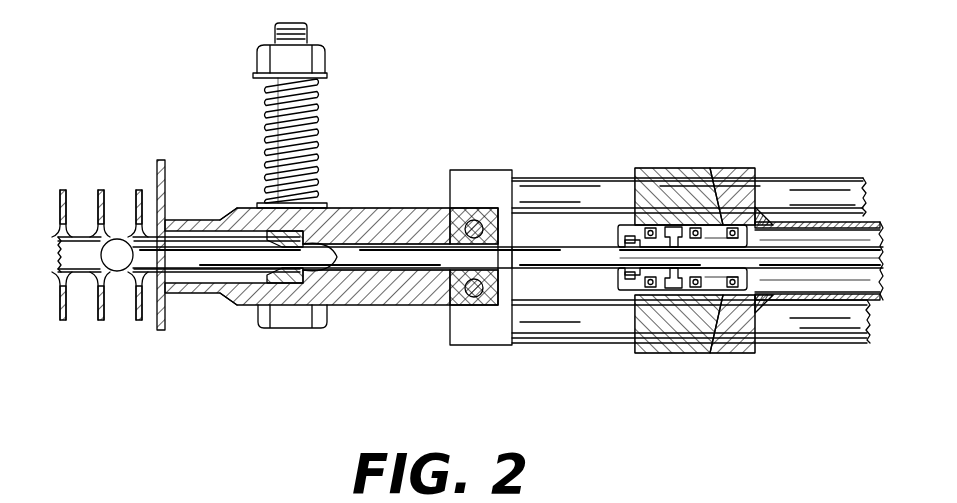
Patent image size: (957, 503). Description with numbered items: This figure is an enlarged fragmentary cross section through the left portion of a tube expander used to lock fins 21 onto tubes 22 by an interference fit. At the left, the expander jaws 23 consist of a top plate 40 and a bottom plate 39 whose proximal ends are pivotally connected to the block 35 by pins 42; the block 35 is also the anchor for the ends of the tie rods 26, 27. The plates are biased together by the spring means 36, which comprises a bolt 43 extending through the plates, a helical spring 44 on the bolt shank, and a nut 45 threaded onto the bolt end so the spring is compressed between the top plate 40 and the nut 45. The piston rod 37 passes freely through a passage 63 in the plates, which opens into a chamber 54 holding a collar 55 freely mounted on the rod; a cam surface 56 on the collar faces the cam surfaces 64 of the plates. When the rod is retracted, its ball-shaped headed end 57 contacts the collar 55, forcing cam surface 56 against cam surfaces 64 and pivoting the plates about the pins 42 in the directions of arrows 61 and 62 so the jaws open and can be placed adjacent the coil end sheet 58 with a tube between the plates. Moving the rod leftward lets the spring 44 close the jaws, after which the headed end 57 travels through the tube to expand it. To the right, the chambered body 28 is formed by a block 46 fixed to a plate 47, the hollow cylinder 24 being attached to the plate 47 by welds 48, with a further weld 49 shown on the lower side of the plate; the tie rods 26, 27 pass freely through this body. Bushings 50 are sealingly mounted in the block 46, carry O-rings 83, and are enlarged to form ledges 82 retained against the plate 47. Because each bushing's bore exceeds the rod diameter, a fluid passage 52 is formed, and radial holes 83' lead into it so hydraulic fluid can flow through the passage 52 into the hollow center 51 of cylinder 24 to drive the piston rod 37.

The fins 21 is at (70, 196).
The tubes 22 is at (152, 222).
The expander jaws 23 is at (389, 164).
The hollow cylinder 24 is at (866, 227).
The tie rod 26 is at (612, 168).
The tie rod 27 is at (603, 340).
The chambered body 28 is at (763, 148).
The block 35 is at (479, 170).
The spring means 36 is at (382, 103).
The piston rod 37 is at (548, 262).
The bottom plate 39 is at (412, 297).
The top plate 40 is at (405, 209).
The pins 42 is at (477, 222).
The bolt 43 is at (278, 328).
The helical spring 44 is at (321, 122).
The nut 45 is at (326, 58).
The block 46 is at (690, 350).
The plate 47 is at (745, 296).
The welds 48 is at (757, 215).
The wedge 49 is at (758, 318).
The bushings 50 is at (621, 292).
The hollow center 51 is at (866, 280).
The fluid passage 52 is at (745, 250).
The chamber 54 is at (314, 238).
The collar 55 is at (232, 296).
The cam surface 56 is at (305, 275).
The ball-shaped headed end 57 is at (110, 272).
The coil end sheet 58 is at (165, 183).
The arrow 61 is at (472, 311).
The arrow 62 is at (459, 209).
The passage 63 is at (455, 272).
The cam surfaces 64 is at (242, 244).
The ledges 82 is at (700, 292).
The O-rings 83 is at (669, 322).
The holes 83' is at (684, 214).